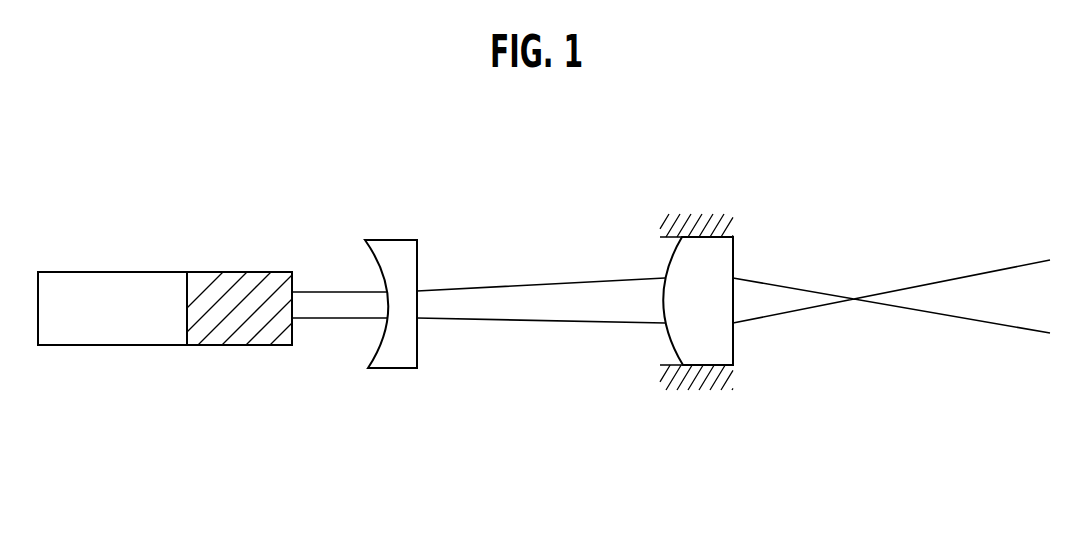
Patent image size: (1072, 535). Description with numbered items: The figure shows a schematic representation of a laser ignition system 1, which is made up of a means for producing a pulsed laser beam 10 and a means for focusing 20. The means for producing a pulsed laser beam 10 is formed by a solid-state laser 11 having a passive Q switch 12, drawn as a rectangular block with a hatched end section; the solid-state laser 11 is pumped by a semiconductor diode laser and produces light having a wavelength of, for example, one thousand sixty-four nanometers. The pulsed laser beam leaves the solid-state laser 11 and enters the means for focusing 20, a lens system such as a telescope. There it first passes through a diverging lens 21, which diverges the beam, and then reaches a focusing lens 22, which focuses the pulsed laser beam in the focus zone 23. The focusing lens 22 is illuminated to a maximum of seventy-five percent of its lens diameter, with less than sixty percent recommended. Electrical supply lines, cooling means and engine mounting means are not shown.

The laser ignition system 1 is at (150, 158).
The means for producing a pulsed laser beam 10 is at (169, 390).
The solid-state laser 11 is at (112, 347).
The passive Q switch 12 is at (239, 349).
The means for focusing 20 is at (551, 358).
The diverging lens 21 is at (400, 353).
The focusing lens 22 is at (696, 331).
The focus zone 23 is at (859, 302).